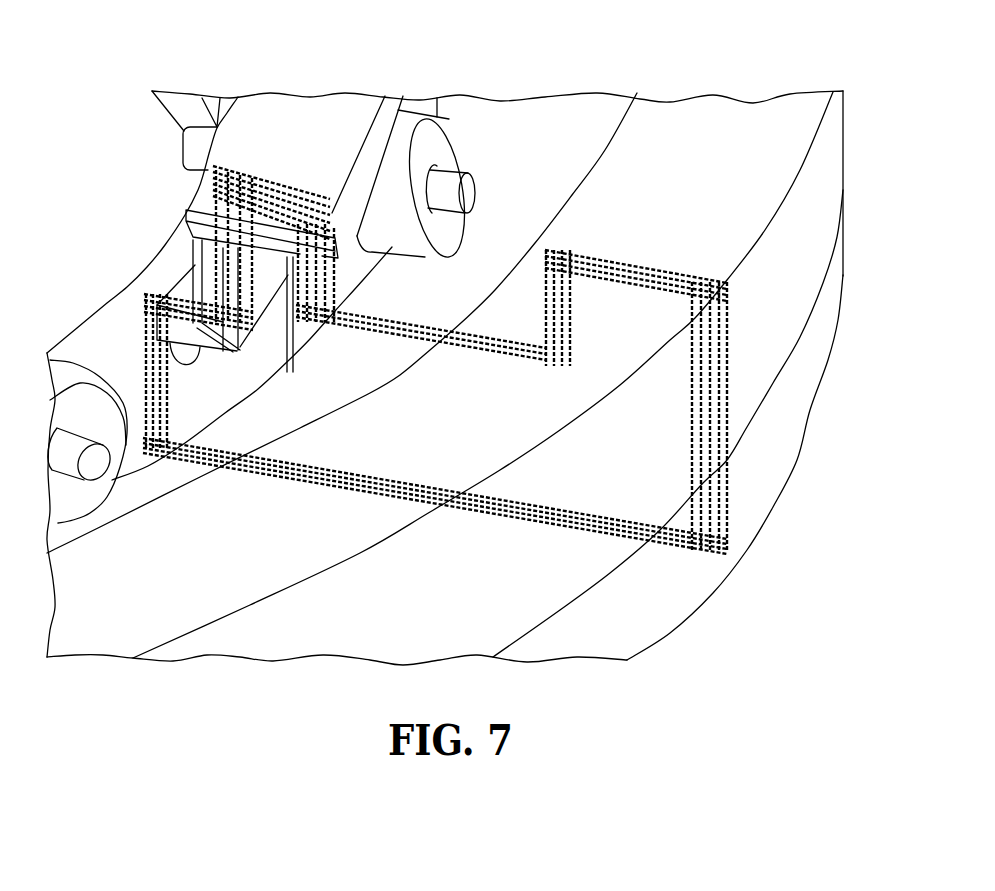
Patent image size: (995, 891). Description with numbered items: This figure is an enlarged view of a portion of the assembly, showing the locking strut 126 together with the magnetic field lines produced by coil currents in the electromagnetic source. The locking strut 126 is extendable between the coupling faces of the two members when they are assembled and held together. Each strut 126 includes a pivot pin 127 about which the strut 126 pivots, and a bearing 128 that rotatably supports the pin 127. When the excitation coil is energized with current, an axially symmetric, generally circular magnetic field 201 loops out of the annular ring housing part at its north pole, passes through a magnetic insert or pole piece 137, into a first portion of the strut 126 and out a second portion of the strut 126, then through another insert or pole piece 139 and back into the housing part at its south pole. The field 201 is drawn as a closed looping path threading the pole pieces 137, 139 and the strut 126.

The locking strut 126 is at (186, 192).
The pivot pin 127 is at (184, 150).
The bearing 128 is at (446, 136).
The magnetic insert or pole piece 137 is at (150, 357).
The insert or pole piece 139 is at (286, 345).
The magnetic field 201 is at (722, 490).